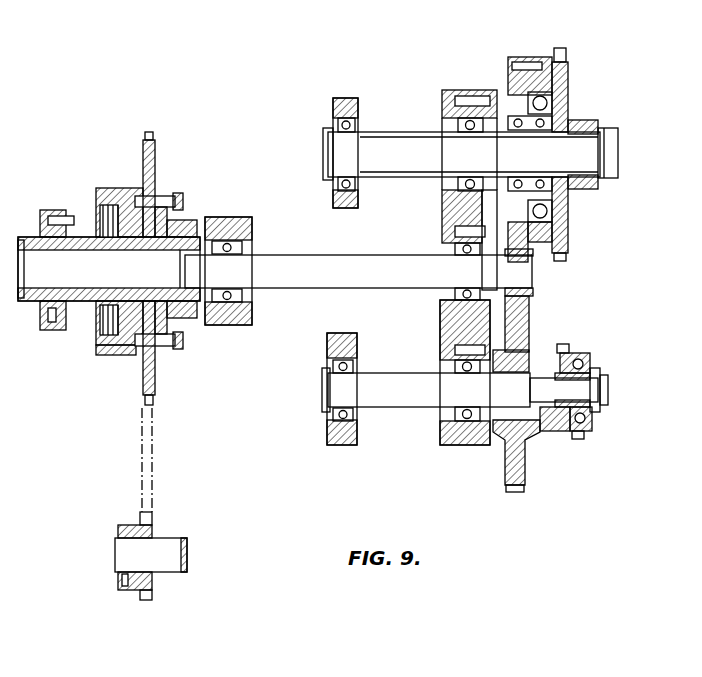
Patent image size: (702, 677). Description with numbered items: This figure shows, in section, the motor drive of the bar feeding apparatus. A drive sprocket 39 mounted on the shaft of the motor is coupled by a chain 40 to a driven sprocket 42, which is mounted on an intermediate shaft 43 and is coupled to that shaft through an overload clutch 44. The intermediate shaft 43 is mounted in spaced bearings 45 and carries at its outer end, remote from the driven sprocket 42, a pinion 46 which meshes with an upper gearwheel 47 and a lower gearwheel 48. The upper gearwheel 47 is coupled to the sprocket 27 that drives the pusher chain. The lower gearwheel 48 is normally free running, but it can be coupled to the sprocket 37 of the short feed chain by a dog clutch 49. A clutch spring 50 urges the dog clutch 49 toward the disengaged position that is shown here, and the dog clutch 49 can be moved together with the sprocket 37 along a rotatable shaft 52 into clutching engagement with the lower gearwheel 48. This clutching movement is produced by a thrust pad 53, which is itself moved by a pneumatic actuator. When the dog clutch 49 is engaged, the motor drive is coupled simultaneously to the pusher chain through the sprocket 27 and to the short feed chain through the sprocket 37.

The sprocket 27 is at (561, 101).
The upper gearwheel 47 is at (566, 240).
The pinion 46 is at (533, 288).
The lower gearwheel 48 is at (528, 330).
The sprocket 37 is at (576, 353).
The thrust pad 53 is at (592, 386).
The dog clutch 49 is at (549, 432).
The clutch spring 50 is at (505, 437).
The rotatable shaft 52 is at (416, 398).
The bearings 45 is at (240, 300).
The intermediate shaft 43 is at (357, 278).
The overload clutch 44 is at (97, 336).
The driven sprocket 42 is at (141, 374).
The chain 40 is at (142, 443).
The drive sprocket 39 is at (150, 526).